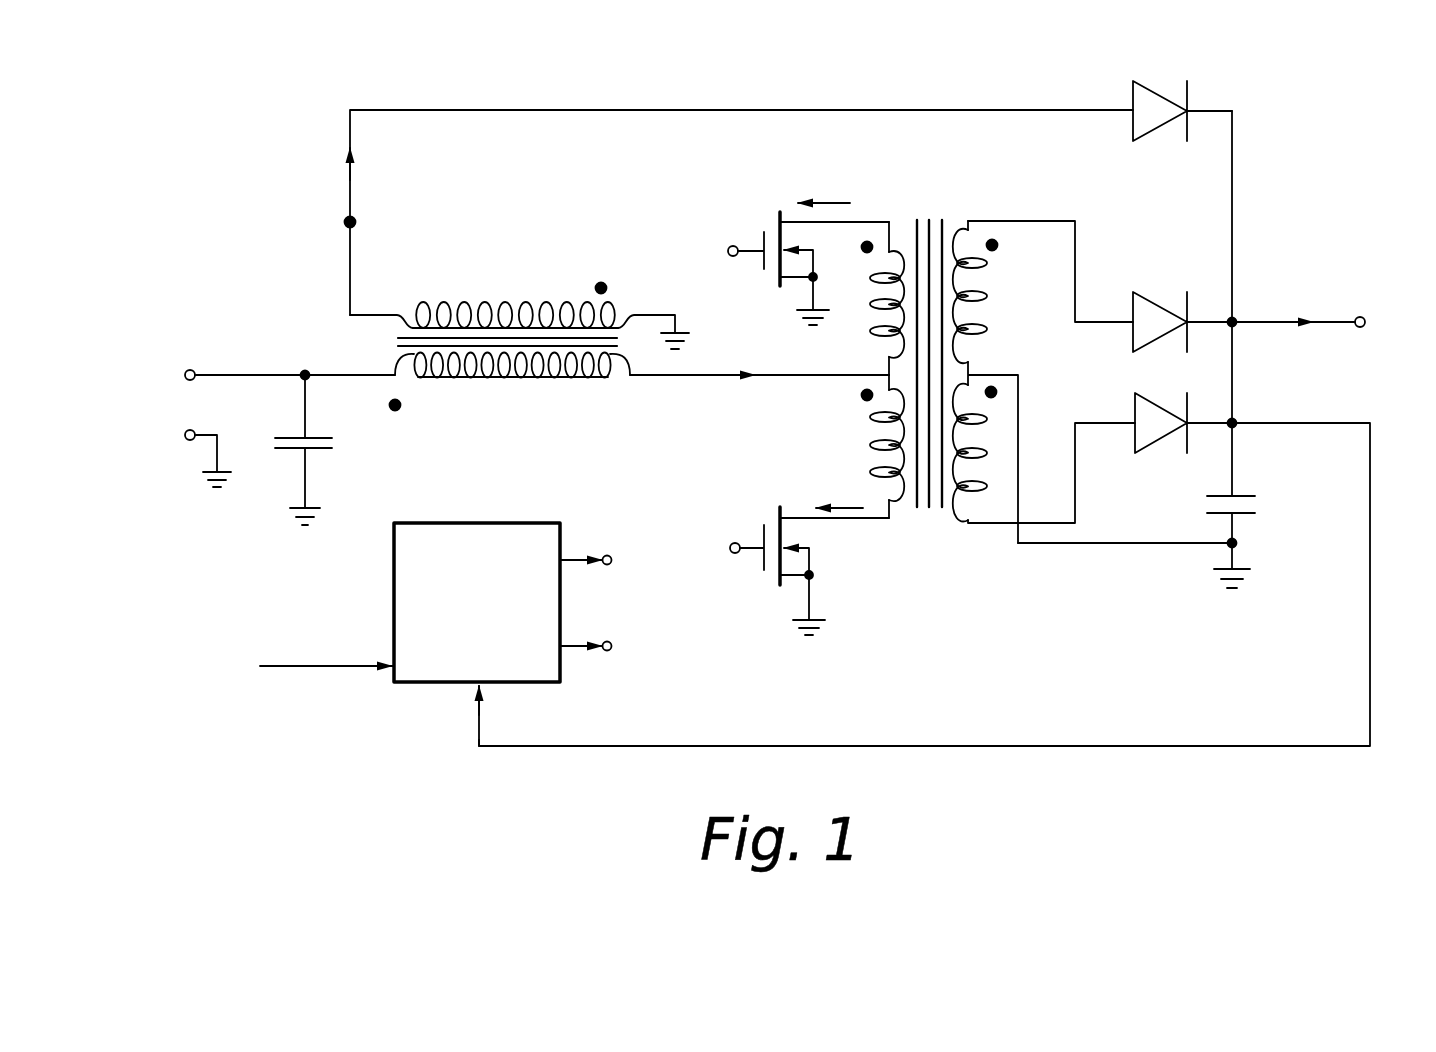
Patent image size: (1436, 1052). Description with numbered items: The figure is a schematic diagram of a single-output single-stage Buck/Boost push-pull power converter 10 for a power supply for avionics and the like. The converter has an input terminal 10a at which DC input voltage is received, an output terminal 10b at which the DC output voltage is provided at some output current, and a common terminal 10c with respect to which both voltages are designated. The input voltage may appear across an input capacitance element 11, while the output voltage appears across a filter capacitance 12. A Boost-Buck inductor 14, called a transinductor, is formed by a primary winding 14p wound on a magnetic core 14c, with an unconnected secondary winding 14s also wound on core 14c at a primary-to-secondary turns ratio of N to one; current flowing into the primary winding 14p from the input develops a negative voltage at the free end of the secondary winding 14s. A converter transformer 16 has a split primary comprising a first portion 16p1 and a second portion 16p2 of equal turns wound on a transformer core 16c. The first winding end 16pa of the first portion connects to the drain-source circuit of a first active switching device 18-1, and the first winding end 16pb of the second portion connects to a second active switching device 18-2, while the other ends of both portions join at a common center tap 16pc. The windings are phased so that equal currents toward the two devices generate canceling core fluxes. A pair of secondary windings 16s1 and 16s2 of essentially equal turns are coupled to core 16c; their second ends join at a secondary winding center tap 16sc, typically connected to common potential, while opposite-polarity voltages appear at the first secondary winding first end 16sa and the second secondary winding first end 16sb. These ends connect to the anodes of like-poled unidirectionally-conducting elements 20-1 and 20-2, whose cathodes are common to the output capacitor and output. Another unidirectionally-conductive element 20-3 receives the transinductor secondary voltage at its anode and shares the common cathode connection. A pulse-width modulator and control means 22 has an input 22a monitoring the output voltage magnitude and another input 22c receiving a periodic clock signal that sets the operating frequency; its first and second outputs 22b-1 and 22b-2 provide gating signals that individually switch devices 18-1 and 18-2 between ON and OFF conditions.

The power converter 10 is at (248, 104).
The input terminal 10a is at (190, 370).
The output terminal 10b is at (1360, 318).
The common terminal 10c is at (192, 430).
The input capacitance element 11 is at (320, 438).
The filter capacitance 12 is at (1246, 492).
The Boost-Buck inductor 14 is at (498, 410).
The magnetic core 14c is at (388, 335).
The secondary winding 14s is at (504, 312).
The primary winding 14p is at (530, 378).
The converter transformer 16 is at (930, 560).
The first winding end 16pa is at (860, 214).
The first winding end 16pb is at (845, 518).
The common center tap 16pc is at (820, 378).
The first portion 16p1 is at (870, 345).
The second portion 16p2 is at (872, 418).
The transformer core 16c is at (945, 222).
The first secondary winding first end 16sa is at (1050, 218).
The second secondary winding first end 16sb is at (995, 525).
The secondary winding center tap 16sc is at (1005, 372).
The first secondary winding 16s1 is at (975, 312).
The second secondary winding 16s2 is at (990, 430).
The first active switching device 18-1 is at (772, 222).
The second active switching device 18-2 is at (754, 583).
The unidirectionally-conducting element 20-1 is at (1152, 292).
The unidirectionally-conducting element 20-2 is at (1155, 452).
The unidirectionally-conductive element 20-3 is at (1155, 80).
The pulse-width modulator and control means 22 is at (503, 523).
The input 22a is at (482, 725).
The first output 22b-1 is at (575, 560).
The second output 22b-2 is at (575, 648).
The input 22c is at (340, 668).